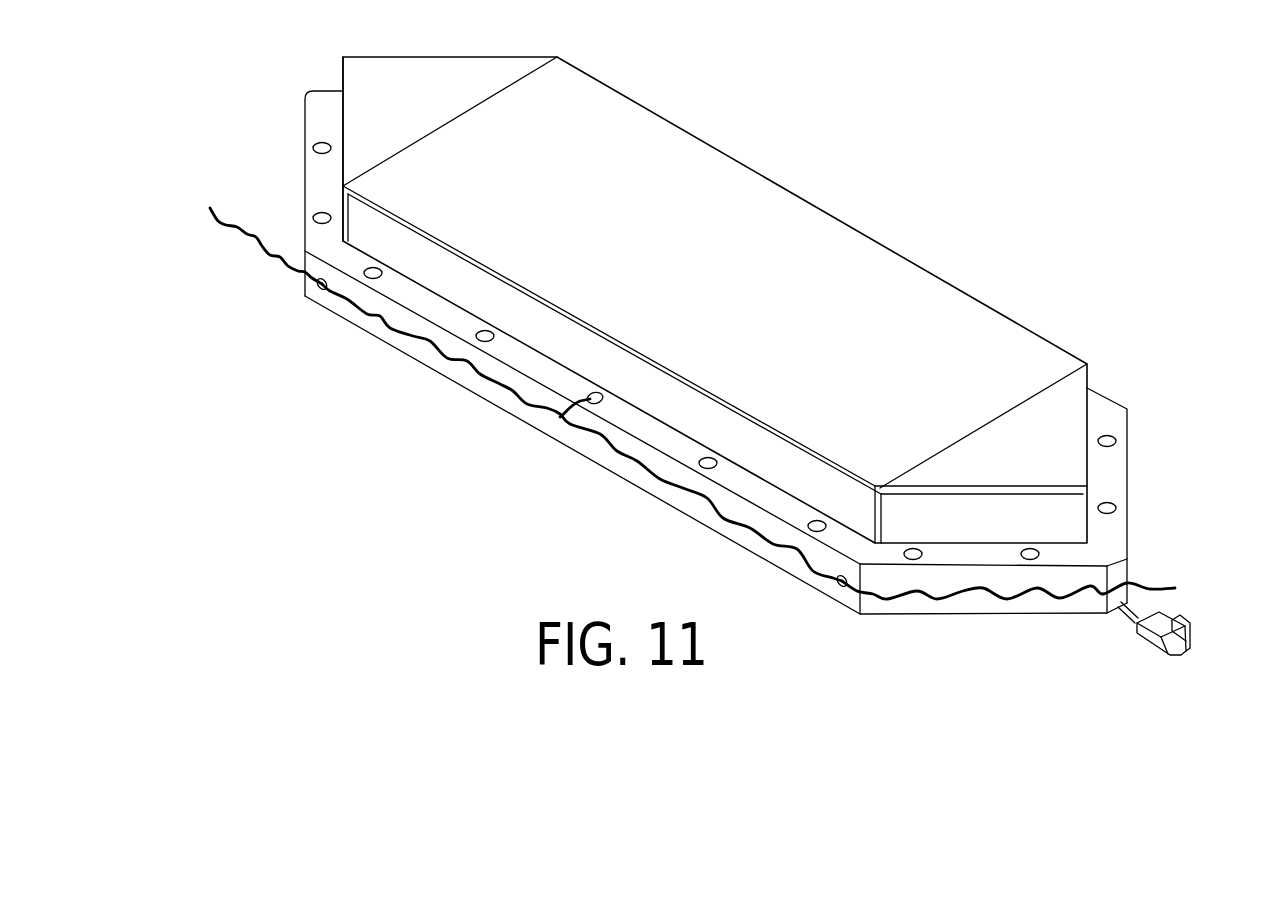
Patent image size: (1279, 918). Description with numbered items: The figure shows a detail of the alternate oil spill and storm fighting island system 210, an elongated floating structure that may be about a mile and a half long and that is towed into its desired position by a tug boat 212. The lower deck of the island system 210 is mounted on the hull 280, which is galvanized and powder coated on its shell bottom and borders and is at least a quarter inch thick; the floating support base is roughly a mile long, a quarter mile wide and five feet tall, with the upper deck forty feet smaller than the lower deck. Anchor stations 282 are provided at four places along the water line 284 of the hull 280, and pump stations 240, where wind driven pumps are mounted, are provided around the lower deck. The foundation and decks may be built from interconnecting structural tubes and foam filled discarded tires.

The oil spill and storm fighting island system 210 is at (1094, 306).
The tug boat 212 is at (1177, 613).
The pump station 240 is at (588, 399).
The hull 280 is at (420, 360).
The anchor station 282 is at (323, 293).
The water line 284 is at (244, 236).